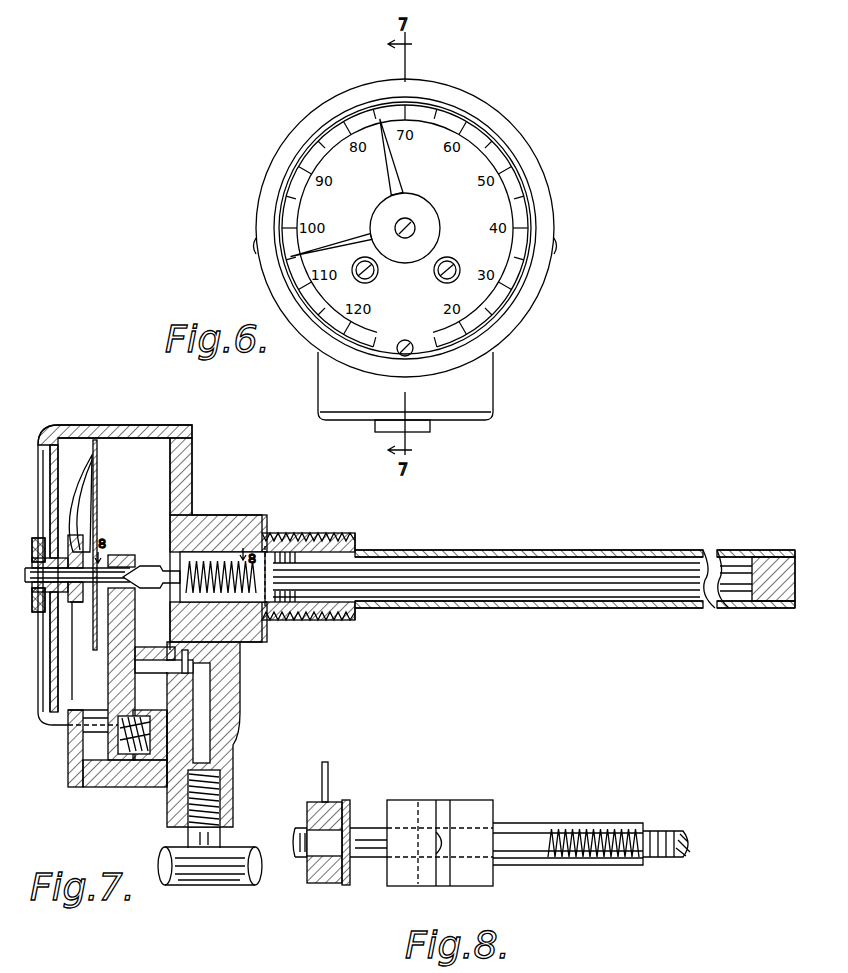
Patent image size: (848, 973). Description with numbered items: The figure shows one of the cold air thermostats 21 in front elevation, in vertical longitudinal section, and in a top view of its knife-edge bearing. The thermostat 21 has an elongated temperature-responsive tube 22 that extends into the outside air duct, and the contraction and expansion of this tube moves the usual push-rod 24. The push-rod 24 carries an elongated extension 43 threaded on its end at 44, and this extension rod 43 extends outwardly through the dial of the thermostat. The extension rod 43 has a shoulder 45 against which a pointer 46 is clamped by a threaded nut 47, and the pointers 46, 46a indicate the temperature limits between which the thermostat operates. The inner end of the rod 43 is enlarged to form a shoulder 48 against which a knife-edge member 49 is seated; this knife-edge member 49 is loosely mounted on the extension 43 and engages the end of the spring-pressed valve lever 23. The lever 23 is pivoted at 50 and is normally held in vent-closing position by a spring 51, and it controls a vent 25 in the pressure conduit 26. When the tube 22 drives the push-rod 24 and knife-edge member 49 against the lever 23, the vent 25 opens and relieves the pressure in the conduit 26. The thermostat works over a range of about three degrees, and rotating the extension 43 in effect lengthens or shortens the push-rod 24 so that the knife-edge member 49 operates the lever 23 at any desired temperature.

In FIG. 6, the thermostat 21 is at (508, 374).
In FIG. 7, the thermostat 21 is at (204, 473).
In FIG. 7, the temperature-responsive tube 22 is at (518, 550).
In FIG. 7, the valve lever 23 is at (112, 683).
In FIG. 7, the push-rod 24 is at (493, 593).
In FIG. 8, the push-rod 24 is at (680, 830).
In FIG. 7, the vent 25 is at (242, 645).
In FIG. 7, the pressure conduit 26 is at (246, 876).
In FIG. 7, the elongated extension 43 is at (170, 572).
In FIG. 8, the elongated extension 43 is at (513, 828).
In FIG. 7, the threaded connection 44 is at (225, 568).
In FIG. 8, the threaded connection 44 is at (550, 835).
In FIG. 7, the shoulder 45 is at (96, 545).
In FIG. 8, the shoulder 45 is at (350, 804).
In FIG. 6, the pointer 46 is at (380, 136).
In FIG. 7, the pointer 46 is at (80, 505).
In FIG. 8, the pointer 46 is at (330, 778).
In FIG. 6, the pointer 46a is at (292, 258).
In FIG. 7, the pointer 46a is at (80, 603).
In FIG. 6, the threaded nut 47 is at (430, 226).
In FIG. 7, the threaded nut 47 is at (33, 585).
In FIG. 8, the threaded nut 47 is at (308, 818).
In FIG. 7, the shoulder 48 is at (162, 588).
In FIG. 7, the knife-edge member 49 is at (120, 557).
In FIG. 8, the knife-edge member 49 is at (455, 818).
In FIG. 7, the pivot 50 is at (120, 712).
In FIG. 7, the spring 51 is at (130, 755).